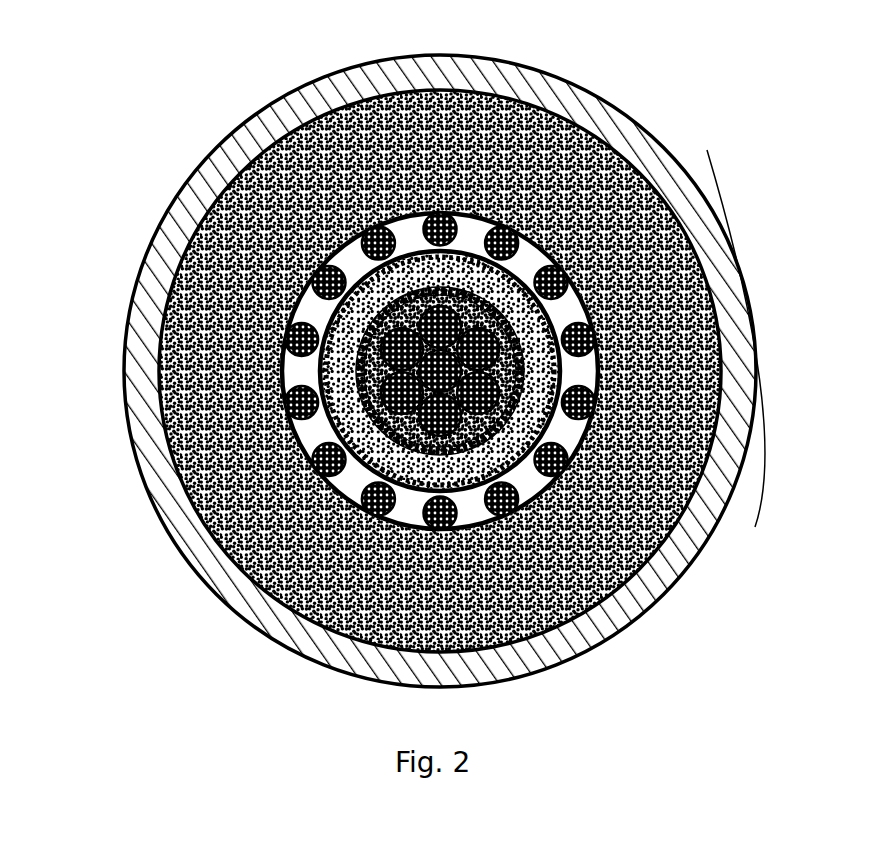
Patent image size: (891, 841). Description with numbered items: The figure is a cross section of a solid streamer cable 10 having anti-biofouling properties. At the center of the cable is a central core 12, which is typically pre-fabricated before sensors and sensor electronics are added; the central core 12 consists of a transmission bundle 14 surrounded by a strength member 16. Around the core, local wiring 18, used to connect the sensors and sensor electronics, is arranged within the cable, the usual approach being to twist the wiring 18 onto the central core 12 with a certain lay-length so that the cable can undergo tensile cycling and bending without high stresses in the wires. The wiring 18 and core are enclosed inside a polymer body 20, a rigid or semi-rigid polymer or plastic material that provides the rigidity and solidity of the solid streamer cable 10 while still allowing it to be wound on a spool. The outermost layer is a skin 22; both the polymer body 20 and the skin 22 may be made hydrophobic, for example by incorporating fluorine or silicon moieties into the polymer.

The solid streamer cable 10 is at (205, 125).
The central core 12 is at (496, 290).
The transmission bundle 14 is at (587, 300).
The strength member 16 is at (522, 371).
The local wiring 18 is at (582, 404).
The polymer body 20 is at (663, 490).
The skin 22 is at (158, 530).